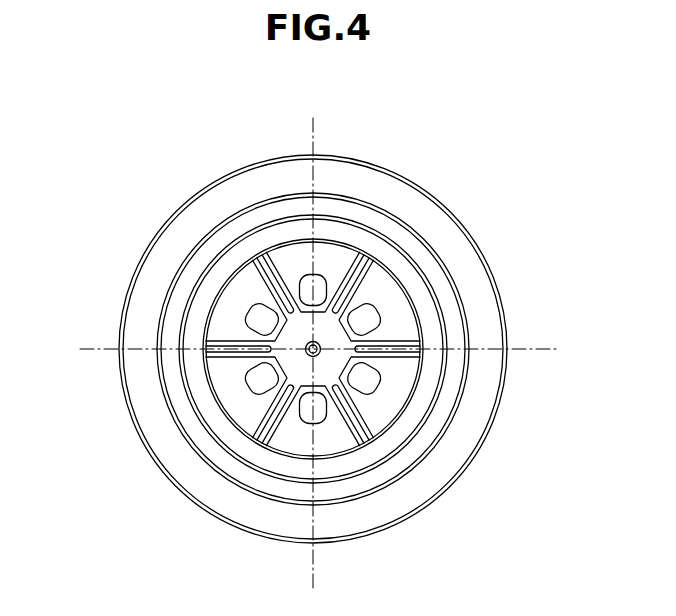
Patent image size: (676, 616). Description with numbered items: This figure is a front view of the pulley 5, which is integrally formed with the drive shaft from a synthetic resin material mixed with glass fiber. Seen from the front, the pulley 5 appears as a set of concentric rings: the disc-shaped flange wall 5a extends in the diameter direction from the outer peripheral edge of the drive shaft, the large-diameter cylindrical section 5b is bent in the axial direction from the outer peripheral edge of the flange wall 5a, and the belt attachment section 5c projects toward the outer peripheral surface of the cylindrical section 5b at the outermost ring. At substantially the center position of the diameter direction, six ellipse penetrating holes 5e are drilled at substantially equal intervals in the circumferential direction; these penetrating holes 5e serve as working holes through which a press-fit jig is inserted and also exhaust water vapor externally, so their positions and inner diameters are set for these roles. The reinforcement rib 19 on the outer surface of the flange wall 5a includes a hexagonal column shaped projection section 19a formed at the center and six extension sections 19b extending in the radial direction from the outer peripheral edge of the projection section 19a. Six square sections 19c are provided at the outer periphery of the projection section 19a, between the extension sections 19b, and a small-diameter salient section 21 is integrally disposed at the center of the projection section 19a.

The pulley 5 is at (335, 135).
The flange wall 5a is at (367, 447).
The cylindrical section 5b is at (290, 462).
The belt attachment section 5c is at (130, 423).
The penetrating holes 5e is at (320, 292).
The reinforcement rib 19 is at (390, 371).
The projection section 19a is at (330, 475).
The extension sections 19b is at (262, 262).
The square sections 19c is at (256, 302).
The salient section 21 is at (226, 422).